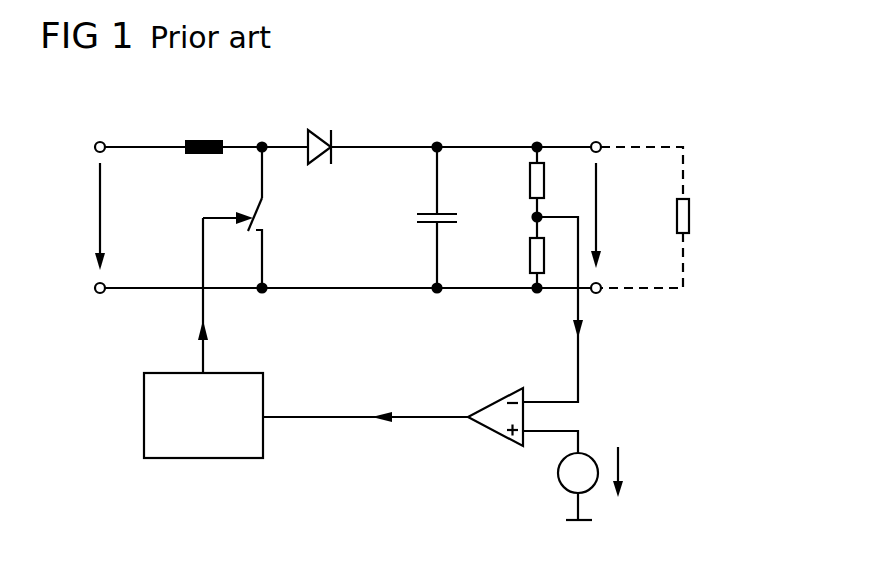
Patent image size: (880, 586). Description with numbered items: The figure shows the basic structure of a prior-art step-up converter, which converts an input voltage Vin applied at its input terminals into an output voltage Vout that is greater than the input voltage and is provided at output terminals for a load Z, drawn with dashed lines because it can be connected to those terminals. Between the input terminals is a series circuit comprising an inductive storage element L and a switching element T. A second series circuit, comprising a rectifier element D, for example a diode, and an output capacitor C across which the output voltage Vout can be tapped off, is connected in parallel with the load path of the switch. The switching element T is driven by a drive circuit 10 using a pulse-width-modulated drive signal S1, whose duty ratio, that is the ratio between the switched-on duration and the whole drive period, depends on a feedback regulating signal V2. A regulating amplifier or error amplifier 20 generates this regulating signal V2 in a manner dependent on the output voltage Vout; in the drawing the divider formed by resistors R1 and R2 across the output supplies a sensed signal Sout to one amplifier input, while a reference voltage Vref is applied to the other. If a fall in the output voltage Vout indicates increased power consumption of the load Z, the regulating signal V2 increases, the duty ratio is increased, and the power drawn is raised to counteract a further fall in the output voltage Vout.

The inductive storage element L is at (205, 139).
The rectifier element D is at (319, 134).
The switching element T is at (268, 214).
The output capacitor C is at (415, 223).
The voltage divider resistor R1 is at (530, 171).
The voltage divider resistor R2 is at (530, 243).
The load Z is at (690, 210).
The drive circuit 10 is at (144, 404).
The comparator 20 is at (496, 434).
The input voltage Vin is at (82, 216).
The output voltage Vout is at (623, 215).
The pulse-width-modulated drive signal S1 is at (223, 295).
The regulating signal V2 is at (365, 404).
The sensed output signal Sout is at (607, 333).
The reference voltage source Vref is at (617, 472).